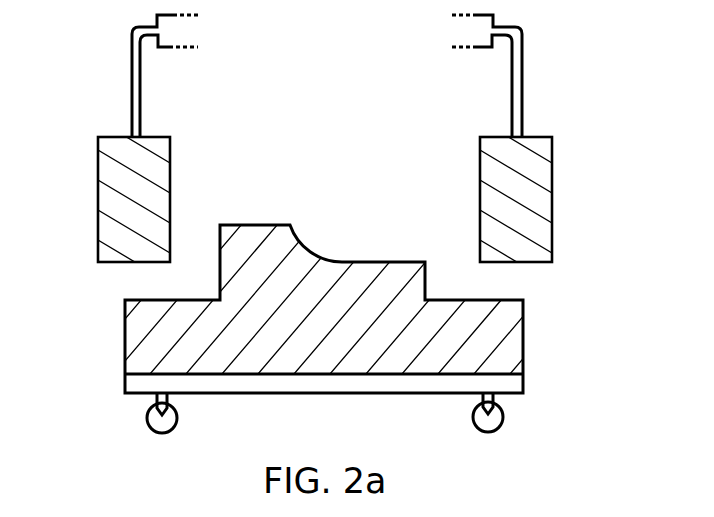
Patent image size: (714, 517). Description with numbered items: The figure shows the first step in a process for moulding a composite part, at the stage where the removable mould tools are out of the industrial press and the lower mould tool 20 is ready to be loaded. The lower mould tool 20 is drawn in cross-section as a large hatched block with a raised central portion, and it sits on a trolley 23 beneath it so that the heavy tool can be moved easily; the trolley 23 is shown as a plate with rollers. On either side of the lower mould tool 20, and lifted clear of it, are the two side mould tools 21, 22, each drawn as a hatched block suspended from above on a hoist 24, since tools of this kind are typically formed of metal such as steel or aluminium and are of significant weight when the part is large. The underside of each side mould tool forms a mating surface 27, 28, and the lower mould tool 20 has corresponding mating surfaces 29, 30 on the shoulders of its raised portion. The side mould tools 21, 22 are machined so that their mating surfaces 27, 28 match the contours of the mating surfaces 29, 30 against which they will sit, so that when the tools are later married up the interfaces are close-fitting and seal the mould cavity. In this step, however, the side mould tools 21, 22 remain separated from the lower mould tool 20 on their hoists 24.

The lower mould tool 20 is at (513, 337).
The side mould tool 21 is at (105, 230).
The side mould tool 22 is at (545, 227).
The trolley 23 is at (247, 393).
The hoist 24 is at (171, 39).
The mating surface 27 is at (108, 262).
The mating surface 28 is at (528, 262).
The mating surface 29 is at (182, 300).
The mating surface 30 is at (460, 300).